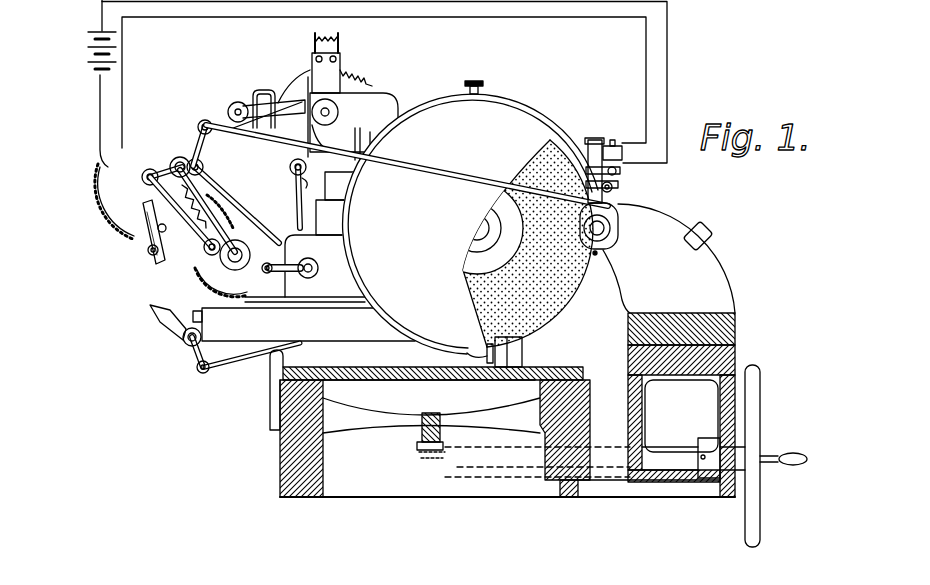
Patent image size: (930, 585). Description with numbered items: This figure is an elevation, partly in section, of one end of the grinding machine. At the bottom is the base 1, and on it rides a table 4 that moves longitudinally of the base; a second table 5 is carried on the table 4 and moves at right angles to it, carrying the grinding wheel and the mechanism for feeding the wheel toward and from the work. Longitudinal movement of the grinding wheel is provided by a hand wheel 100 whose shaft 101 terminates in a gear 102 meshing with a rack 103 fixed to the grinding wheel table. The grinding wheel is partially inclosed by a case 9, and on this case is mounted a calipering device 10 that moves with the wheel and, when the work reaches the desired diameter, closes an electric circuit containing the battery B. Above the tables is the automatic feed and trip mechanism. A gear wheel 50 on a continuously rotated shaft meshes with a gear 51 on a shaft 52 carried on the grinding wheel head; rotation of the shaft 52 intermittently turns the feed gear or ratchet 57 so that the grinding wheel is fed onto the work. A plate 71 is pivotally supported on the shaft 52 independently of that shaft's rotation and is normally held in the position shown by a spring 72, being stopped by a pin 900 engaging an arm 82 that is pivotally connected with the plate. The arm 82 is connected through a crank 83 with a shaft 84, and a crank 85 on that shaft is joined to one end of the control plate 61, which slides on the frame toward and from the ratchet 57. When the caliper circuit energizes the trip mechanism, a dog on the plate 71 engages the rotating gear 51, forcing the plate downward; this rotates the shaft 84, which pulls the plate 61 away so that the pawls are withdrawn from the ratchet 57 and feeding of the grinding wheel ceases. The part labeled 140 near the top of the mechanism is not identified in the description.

The battery B is at (85, 83).
The serrated contact 140 is at (313, 42).
The control plate 61 is at (237, 101).
The feed gear or ratchet 57 is at (348, 81).
The crank 85 is at (190, 150).
The crank 83 is at (172, 166).
The shaft 84 is at (206, 172).
The spring 72 is at (203, 192).
The gear wheel 50 is at (287, 218).
The case 9 is at (521, 124).
The calipering device 10 is at (620, 184).
The arm 82 is at (126, 208).
The pin 900 is at (153, 266).
The plate 71 is at (184, 254).
The gear 51 is at (204, 277).
The shaft 52 is at (238, 258).
The second table 5 is at (304, 324).
The table 4 is at (553, 372).
The rack 103 is at (430, 413).
The gear 102 is at (420, 462).
The base 1 is at (474, 490).
The shaft 101 is at (652, 460).
The hand wheel 100 is at (760, 494).